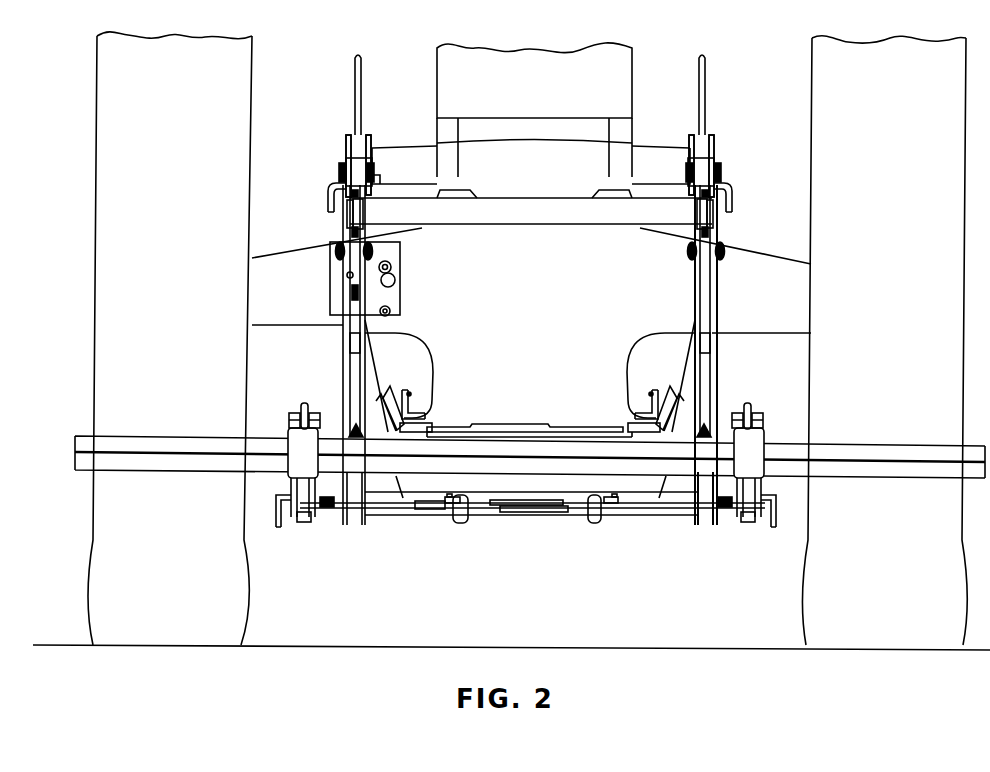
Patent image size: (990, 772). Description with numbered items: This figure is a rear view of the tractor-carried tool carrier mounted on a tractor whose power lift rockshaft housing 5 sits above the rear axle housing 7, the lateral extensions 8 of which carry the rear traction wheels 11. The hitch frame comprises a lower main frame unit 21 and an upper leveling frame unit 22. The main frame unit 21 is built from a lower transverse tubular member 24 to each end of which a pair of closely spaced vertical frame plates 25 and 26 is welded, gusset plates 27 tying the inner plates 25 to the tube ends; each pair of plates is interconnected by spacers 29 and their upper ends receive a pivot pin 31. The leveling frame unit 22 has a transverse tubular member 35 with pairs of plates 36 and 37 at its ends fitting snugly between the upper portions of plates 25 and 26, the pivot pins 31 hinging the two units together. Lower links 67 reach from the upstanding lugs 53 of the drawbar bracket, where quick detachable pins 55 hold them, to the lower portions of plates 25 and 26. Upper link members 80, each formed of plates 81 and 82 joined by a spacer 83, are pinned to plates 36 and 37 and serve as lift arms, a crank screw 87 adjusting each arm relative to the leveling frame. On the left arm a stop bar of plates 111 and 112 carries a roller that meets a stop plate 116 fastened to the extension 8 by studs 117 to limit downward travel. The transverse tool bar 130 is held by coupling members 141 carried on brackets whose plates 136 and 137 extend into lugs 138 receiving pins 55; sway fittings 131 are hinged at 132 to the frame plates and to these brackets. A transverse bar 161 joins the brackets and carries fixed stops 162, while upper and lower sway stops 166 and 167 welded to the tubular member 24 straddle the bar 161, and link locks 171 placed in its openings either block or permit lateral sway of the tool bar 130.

The power lift rockshaft housing 5 is at (569, 148).
The rear axle housing 7 is at (746, 240).
The lateral extension 8 is at (268, 262).
The rear traction wheel 11 is at (103, 158).
The lower main frame unit 21 is at (726, 313).
The leveling frame unit 22 is at (497, 193).
The lower transverse tubular member 24 is at (634, 516).
The inner frame plate 25 is at (364, 379).
The outer frame plate 26 is at (343, 368).
The gusset plate 27 is at (381, 485).
The spacer 29 is at (350, 341).
The pivot pin 31 is at (337, 251).
The transverse tubular member 35 is at (548, 212).
The leveling frame plate 36 is at (364, 211).
The leveling frame plate 37 is at (349, 216).
The upstanding lug 53 is at (390, 396).
The quick detachable pin 55 is at (329, 194).
The lower link 67 is at (396, 424).
The upper link member 80 is at (334, 140).
The lift arm plate 81 is at (369, 137).
The lift arm plate 82 is at (348, 135).
The spacer 83 is at (352, 170).
The crank screw 87 is at (361, 100).
The stop bar plate 111 is at (348, 279).
The stop bar plate 112 is at (397, 287).
The stop plate 116 is at (399, 250).
The stud 117 is at (392, 268).
The transverse tool bar 130 is at (851, 434).
The sway fitting 131 is at (327, 512).
The hinge connection 132 is at (351, 428).
The bracket plate 136 is at (303, 408).
The bracket plate 137 is at (289, 419).
The lug 138 is at (305, 524).
The coupling member 141 is at (285, 468).
The transverse bar 161 is at (425, 509).
The fixed stop 162 is at (450, 500).
The upper sway stop 166 is at (536, 504).
The lower sway stop 167 is at (527, 513).
The link lock 171 is at (468, 512).